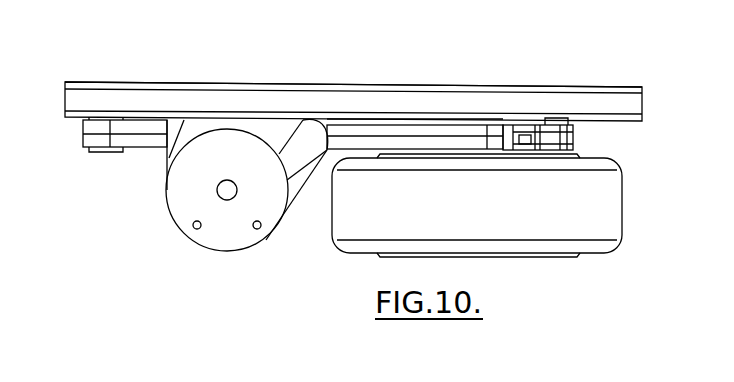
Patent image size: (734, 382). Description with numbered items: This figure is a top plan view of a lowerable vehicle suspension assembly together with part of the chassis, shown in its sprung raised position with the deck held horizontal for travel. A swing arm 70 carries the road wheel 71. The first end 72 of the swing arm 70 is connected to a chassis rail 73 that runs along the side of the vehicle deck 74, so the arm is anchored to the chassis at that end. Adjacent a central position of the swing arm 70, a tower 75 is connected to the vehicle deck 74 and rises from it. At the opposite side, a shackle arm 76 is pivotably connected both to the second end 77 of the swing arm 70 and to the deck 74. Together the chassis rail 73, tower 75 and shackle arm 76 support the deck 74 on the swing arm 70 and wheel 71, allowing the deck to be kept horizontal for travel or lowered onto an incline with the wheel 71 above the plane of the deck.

The swing arm 70 is at (353, 122).
The road wheel 71 is at (500, 208).
The first end 72 is at (142, 138).
The chassis rail 73 is at (558, 102).
The vehicle deck 74 is at (227, 67).
The tower 75 is at (223, 255).
The shackle arm 76 is at (577, 142).
The second end 77 is at (433, 132).